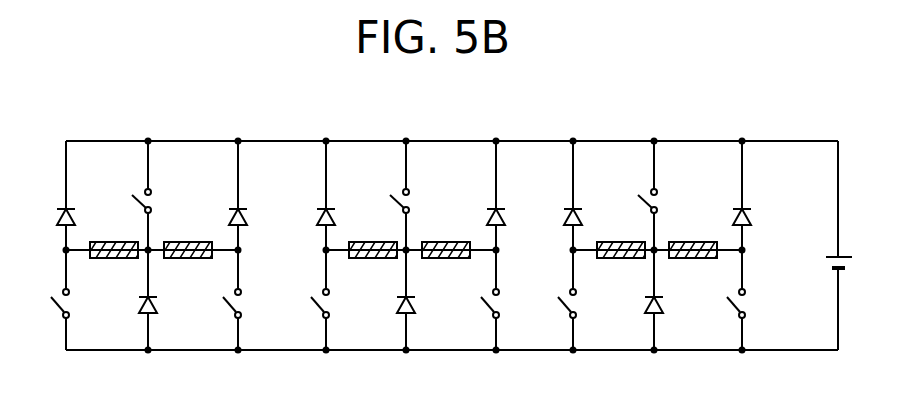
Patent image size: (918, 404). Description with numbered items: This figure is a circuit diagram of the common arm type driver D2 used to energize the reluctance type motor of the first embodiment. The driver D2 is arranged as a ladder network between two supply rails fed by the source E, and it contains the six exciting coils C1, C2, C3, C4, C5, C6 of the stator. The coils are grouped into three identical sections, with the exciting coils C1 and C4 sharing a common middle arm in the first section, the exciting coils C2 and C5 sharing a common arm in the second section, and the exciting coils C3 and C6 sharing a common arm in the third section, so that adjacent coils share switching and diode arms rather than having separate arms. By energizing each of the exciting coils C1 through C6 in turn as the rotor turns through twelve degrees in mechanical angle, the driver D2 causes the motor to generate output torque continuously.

The exciting coil C1 is at (116, 267).
The exciting coil C2 is at (375, 267).
The exciting coil C3 is at (623, 267).
The exciting coil C4 is at (190, 267).
The exciting coil C5 is at (448, 267).
The exciting coil C6 is at (695, 267).
The common arm type driver D2 is at (679, 129).
The power supply E is at (851, 245).